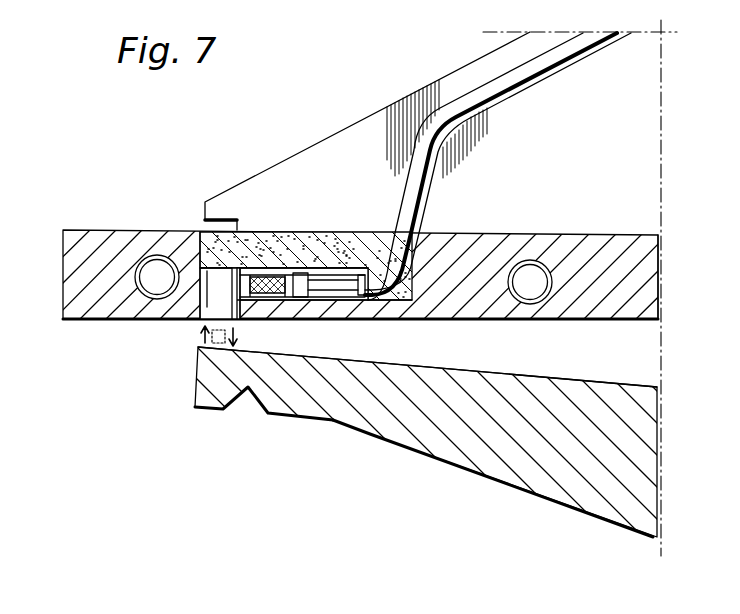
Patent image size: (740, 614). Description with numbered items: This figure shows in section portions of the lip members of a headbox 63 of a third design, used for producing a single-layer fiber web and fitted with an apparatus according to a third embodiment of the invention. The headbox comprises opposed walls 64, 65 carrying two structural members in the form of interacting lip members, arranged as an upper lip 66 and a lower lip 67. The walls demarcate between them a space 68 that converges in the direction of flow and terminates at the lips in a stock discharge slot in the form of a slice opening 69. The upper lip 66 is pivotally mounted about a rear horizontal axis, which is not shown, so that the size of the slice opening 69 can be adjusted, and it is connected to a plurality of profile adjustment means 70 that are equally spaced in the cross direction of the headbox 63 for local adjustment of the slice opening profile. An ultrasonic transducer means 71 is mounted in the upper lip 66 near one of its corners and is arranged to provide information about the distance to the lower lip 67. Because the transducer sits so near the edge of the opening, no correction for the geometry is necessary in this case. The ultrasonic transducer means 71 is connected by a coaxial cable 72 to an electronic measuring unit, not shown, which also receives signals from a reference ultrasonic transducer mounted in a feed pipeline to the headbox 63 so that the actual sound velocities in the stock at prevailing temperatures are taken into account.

The headbox 63 is at (489, 477).
The opposed wall 64 is at (656, 284).
The opposed wall 65 is at (650, 424).
The upper lip 66 is at (63, 250).
The lower lip 67 is at (195, 404).
The space 68 is at (648, 357).
The slice opening 69 is at (196, 338).
The profile adjustment means 70 is at (339, 148).
The ultrasonic transducer means 71 is at (214, 283).
The coaxial cable 72 is at (482, 100).